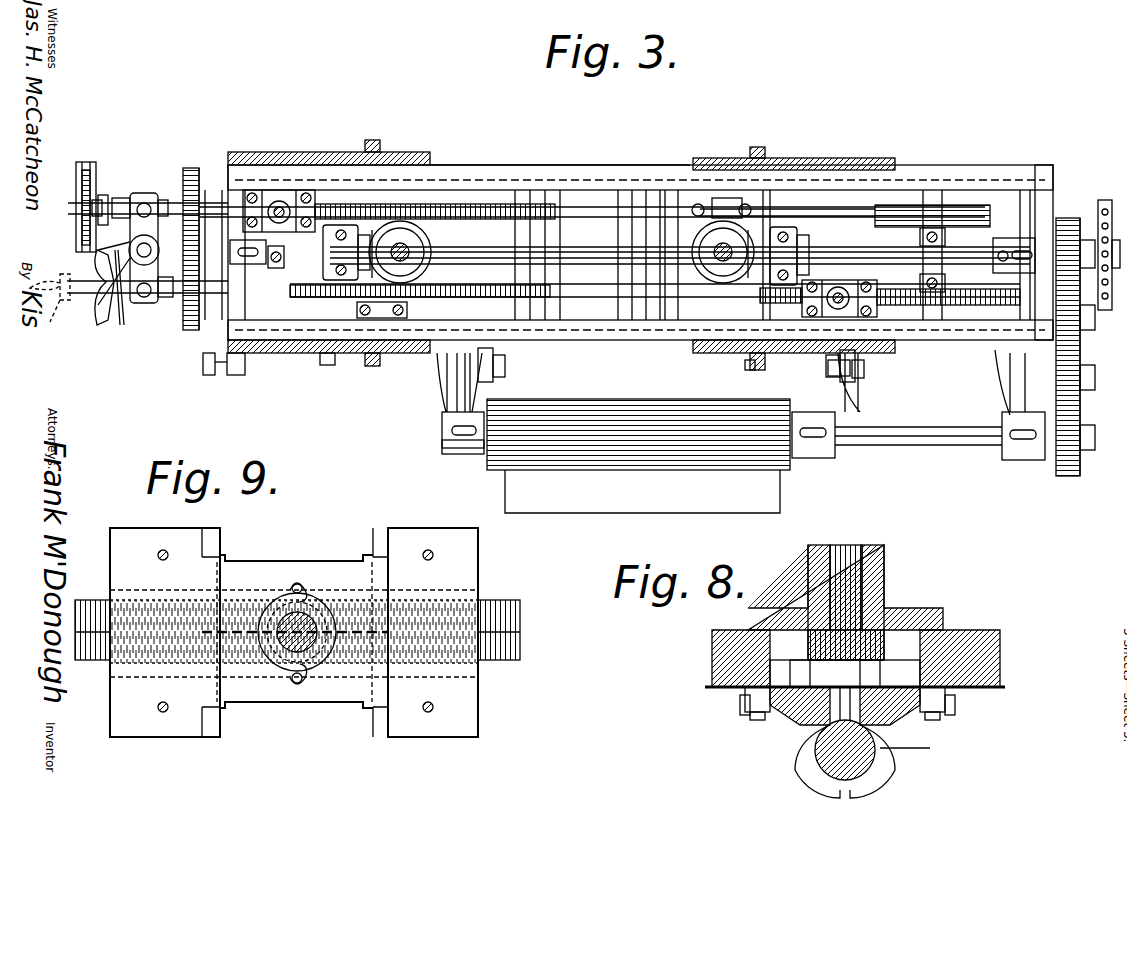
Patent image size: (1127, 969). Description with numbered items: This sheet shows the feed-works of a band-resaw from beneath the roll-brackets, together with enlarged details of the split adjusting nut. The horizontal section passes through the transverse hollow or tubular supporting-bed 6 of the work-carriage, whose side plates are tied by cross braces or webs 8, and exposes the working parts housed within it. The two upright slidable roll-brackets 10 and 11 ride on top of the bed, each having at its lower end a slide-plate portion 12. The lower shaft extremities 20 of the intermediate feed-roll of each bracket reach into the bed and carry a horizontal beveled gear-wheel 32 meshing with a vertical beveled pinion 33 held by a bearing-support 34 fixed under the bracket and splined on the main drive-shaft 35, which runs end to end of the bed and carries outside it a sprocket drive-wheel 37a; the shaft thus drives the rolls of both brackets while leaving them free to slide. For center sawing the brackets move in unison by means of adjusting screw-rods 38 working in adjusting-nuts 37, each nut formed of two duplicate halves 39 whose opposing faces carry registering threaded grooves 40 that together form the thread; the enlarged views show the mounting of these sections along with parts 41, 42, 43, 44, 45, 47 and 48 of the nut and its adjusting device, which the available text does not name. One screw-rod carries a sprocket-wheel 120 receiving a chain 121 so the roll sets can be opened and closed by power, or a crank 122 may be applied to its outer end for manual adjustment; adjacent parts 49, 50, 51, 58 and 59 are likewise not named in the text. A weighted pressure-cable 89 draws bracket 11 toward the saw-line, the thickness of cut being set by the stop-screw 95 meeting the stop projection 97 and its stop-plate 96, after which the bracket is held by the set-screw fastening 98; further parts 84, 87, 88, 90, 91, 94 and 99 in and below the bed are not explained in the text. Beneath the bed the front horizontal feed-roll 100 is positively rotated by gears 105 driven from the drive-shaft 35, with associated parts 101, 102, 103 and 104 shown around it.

In FIG. 3, the transverse hollow supporting-bed 6 is at (560, 154).
In FIG. 3, the cross braces or webs 8 is at (953, 182).
In FIG. 3, the upright slidable roll-bracket 10 is at (294, 152).
In FIG. 3, the upright slidable roll-bracket 11 is at (822, 160).
In FIG. 8, the slide-plate portion 12 is at (710, 662).
In FIG. 3, the lower shaft extremities 20 is at (720, 260).
In FIG. 3, the horizontal beveled gear-wheel 32 is at (426, 252).
In FIG. 3, the vertically-disposed beveled gear pinion 33 is at (595, 249).
In FIG. 3, the bearing-support 34 is at (800, 234).
In FIG. 3, the main drive-shaft 35 is at (594, 256).
In FIG. 9, the adjusting-nut 37 is at (279, 544).
In FIG. 8, the adjusting-nut 37 is at (839, 806).
In FIG. 3, the sprocket drive-wheel 37a is at (1105, 202).
In FIG. 3, the adjusting screw-rod 38 is at (572, 255).
In FIG. 9, the adjusting screw-rod 38 is at (502, 602).
In FIG. 8, the adjusting screw-rod 38 is at (922, 748).
In FIG. 9, the nut sections or halves 39 is at (330, 568).
In FIG. 8, the nut sections or halves 39 is at (812, 776).
In FIG. 9, the registering threaded grooves 40 is at (312, 674).
In FIG. 8, the registering threaded grooves 40 is at (816, 758).
In FIG. 9, the clamp lug 41 is at (238, 706).
In FIG. 8, the clamp lug 41 is at (780, 708).
In FIG. 9, the bolt 42 is at (212, 740).
In FIG. 8, the bolt 42 is at (748, 704).
In FIG. 3, the clamp block 43 is at (310, 186).
In FIG. 9, the clamp block 43 is at (130, 740).
In FIG. 8, the clamp block 43 is at (748, 714).
In FIG. 3, the vertical shaft 44 is at (272, 203).
In FIG. 9, the vertical shaft 44 is at (277, 646).
In FIG. 8, the vertical shaft 44 is at (883, 580).
In FIG. 8, the flange 45 is at (930, 618).
In FIG. 9, the collar 47 is at (285, 606).
In FIG. 8, the collar 47 is at (810, 642).
In FIG. 9, the screw 48 is at (300, 584).
In FIG. 8, the screw 48 is at (835, 673).
In FIG. 3, the bracket 49 is at (147, 192).
In FIG. 3, the lever arm 50 is at (132, 314).
In FIG. 3, the pivot 51 is at (148, 244).
In FIG. 3, the collar 58 is at (168, 302).
In FIG. 3, the gear 59 is at (198, 322).
In FIG. 3, the worm shaft 84 is at (398, 211).
In FIG. 3, the worm 87 is at (410, 292).
In FIG. 3, the worm shaft 88 is at (408, 306).
In FIG. 3, the pressure-cable 89 is at (852, 214).
In FIG. 3, the bearing 90 is at (853, 249).
In FIG. 3, the bracket 91 is at (716, 203).
In FIG. 3, the clamp 94 is at (230, 374).
In FIG. 3, the stop-screw 95 is at (203, 370).
In FIG. 3, the stop-plate 96 is at (848, 406).
In FIG. 3, the stop projection 97 is at (510, 368).
In FIG. 3, the set-screw fastening 98 is at (330, 365).
In FIG. 3, the bolt 99 is at (416, 360).
In FIG. 3, the front feed-roll 100 is at (642, 457).
In FIG. 3, the slot 101 is at (442, 436).
In FIG. 3, the roller bearing 102 is at (453, 458).
In FIG. 3, the bracket 103 is at (440, 395).
In FIG. 3, the bracket 104 is at (1008, 400).
In FIG. 3, the gears 105 is at (1078, 348).
In FIG. 3, the sprocket-wheel 120 is at (94, 172).
In FIG. 3, the chain 121 is at (82, 172).
In FIG. 3, the crank 122 is at (55, 310).